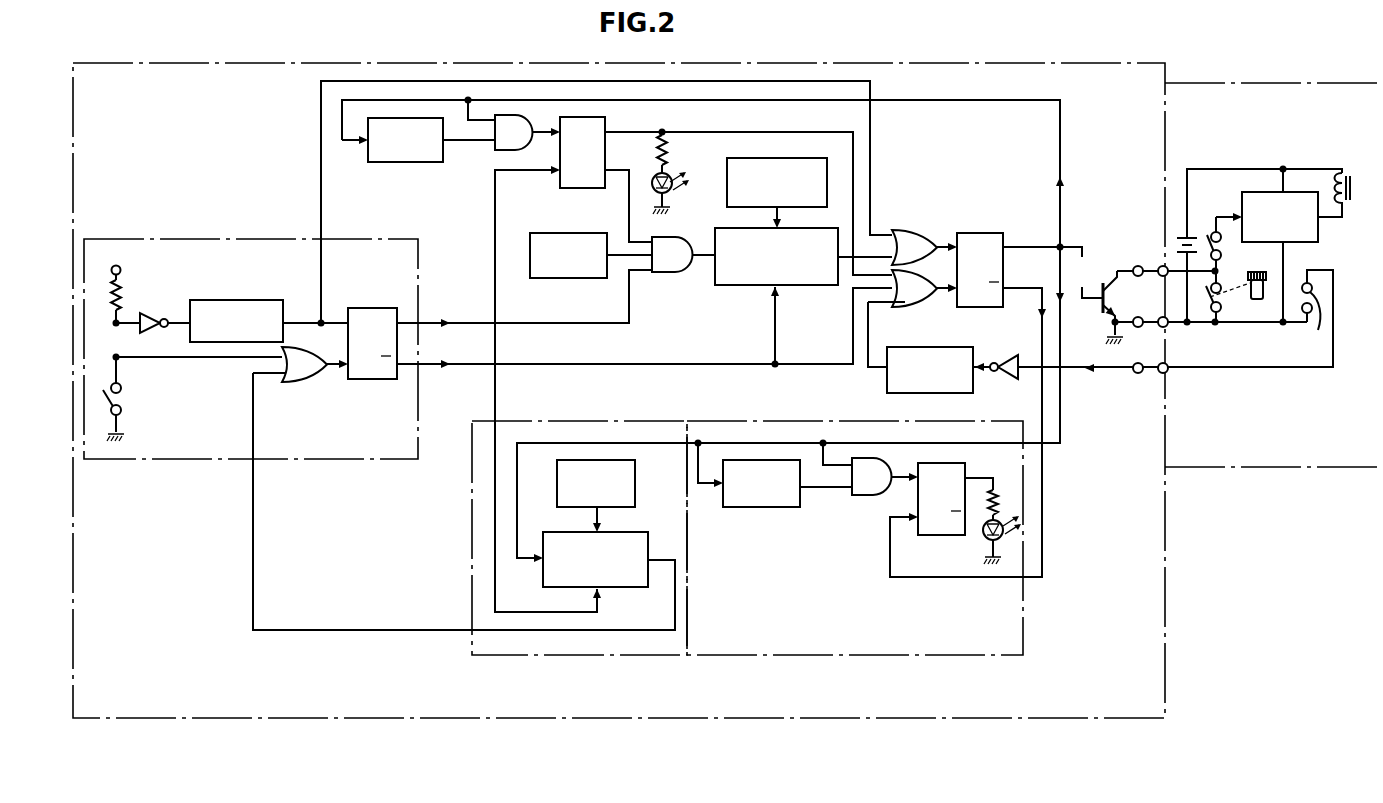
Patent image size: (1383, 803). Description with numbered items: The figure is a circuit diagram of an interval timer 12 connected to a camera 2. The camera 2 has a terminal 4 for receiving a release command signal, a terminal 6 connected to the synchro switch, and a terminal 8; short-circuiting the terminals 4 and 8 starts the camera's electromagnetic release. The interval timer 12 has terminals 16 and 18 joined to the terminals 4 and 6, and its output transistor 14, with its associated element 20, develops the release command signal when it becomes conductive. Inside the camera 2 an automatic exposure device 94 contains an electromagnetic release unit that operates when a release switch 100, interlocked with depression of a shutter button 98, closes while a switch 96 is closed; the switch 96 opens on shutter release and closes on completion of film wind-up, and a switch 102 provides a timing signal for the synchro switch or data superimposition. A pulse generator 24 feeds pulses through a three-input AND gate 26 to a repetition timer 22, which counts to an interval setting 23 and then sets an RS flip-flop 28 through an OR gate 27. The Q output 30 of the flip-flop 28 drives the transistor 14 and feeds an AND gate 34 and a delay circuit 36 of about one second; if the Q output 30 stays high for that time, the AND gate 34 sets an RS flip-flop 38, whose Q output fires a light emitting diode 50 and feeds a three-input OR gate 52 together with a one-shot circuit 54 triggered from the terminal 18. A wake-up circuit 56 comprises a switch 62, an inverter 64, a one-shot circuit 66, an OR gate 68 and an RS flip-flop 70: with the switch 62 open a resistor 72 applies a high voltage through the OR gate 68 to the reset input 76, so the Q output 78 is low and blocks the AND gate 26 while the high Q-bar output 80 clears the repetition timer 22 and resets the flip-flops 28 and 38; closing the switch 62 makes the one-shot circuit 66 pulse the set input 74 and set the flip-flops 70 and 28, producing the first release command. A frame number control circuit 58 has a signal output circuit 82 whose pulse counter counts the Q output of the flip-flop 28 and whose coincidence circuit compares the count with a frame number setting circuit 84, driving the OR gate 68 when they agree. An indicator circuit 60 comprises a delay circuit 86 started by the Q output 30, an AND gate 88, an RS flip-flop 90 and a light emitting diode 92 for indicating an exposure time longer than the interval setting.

The camera 2 is at (1265, 82).
The terminal 4 is at (1160, 266).
The terminal 6 is at (1162, 373).
The terminal 8 is at (1161, 327).
The interval timer 12 is at (897, 62).
The output transistor 14 is at (1105, 316).
The terminal 16 is at (1135, 266).
The terminal 18 is at (1138, 374).
The transistor 20 is at (1124, 287).
The repetition timer 22 is at (747, 286).
The interval set circuit 23 is at (725, 198).
The pulse generator 24 is at (570, 279).
The AND gate 26 is at (674, 273).
The OR gate 27 is at (903, 231).
The RS flip-flop 28 is at (980, 232).
The Q output 30 is at (1027, 247).
The AND gate 34 is at (495, 150).
The delay circuit 36 is at (396, 164).
The RS flip-flop 38 is at (578, 189).
The light emitting diode 50 is at (681, 173).
The OR gate 52 is at (908, 306).
The one-shot circuit 54 is at (969, 350).
The wake-up circuit 56 is at (218, 237).
The photographing frame number control circuit 58 is at (633, 657).
The display circuit 60 is at (777, 660).
The switch 62 is at (123, 397).
The inverter 64 is at (153, 312).
The one-shot circuit 66 is at (245, 300).
The OR gate 68 is at (298, 383).
The RS flip-flop 70 is at (366, 380).
The resistor 72 is at (124, 290).
The set line 74 is at (338, 320).
The reset input 76 is at (331, 374).
The Q output 78 is at (415, 322).
The Q-bar output 80 is at (405, 368).
The signal output circuit 82 is at (630, 533).
The frame number setting circuit 84 is at (628, 478).
The delay circuit 86 is at (764, 508).
The AND gate 88 is at (866, 497).
The RS flip-flop 90 is at (936, 538).
The light emitting diode 92 is at (983, 537).
The automatic exposure device 94 is at (1305, 222).
The switch 96 is at (1212, 234).
The shutter button 98 is at (1263, 276).
The release switch 100 is at (1208, 321).
The switch 102 is at (1320, 319).